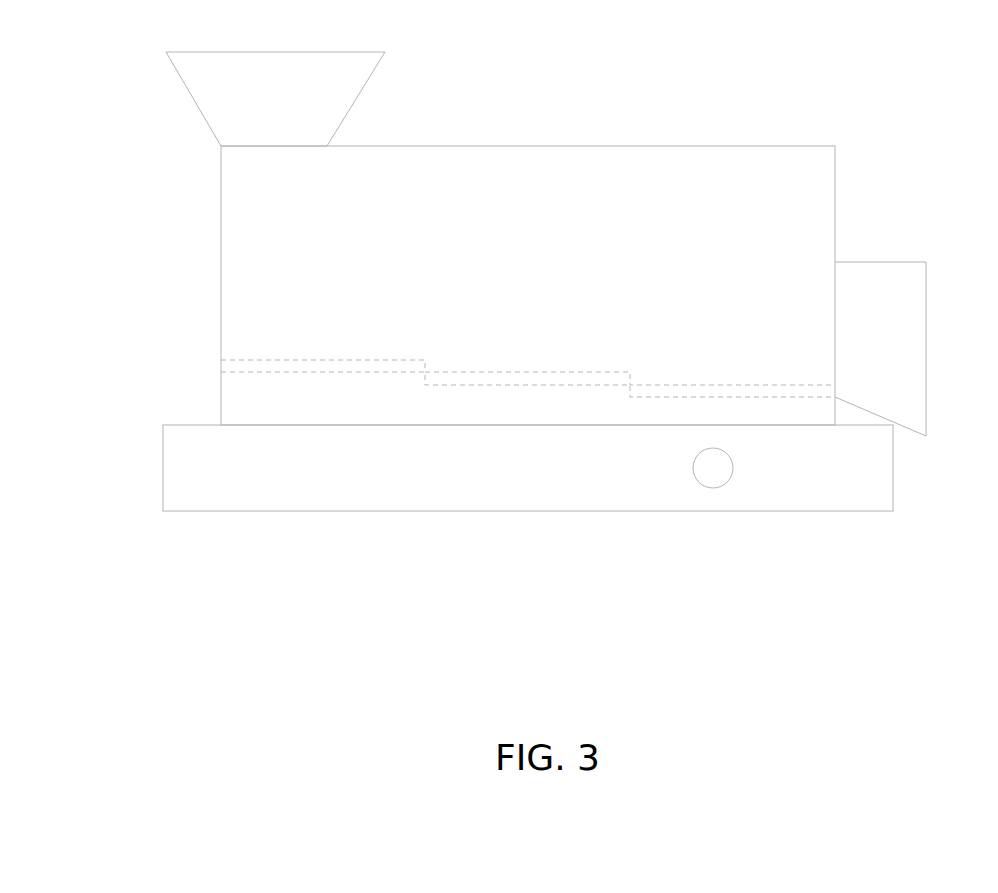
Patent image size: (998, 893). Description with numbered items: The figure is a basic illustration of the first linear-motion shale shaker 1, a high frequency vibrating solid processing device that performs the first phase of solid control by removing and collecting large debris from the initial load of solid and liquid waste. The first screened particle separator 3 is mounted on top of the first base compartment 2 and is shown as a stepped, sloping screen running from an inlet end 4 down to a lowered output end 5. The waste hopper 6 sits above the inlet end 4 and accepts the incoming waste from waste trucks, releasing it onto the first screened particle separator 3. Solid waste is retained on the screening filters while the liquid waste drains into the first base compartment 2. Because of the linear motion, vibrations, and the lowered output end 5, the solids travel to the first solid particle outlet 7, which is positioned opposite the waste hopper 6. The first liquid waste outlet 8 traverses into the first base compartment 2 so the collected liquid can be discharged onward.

The first linear-motion shale shaker 1 is at (103, 389).
The first base compartment 2 is at (378, 503).
The first screened particle separator 3 is at (565, 372).
The inlet end 4 is at (230, 356).
The lowered output end 5 is at (828, 378).
The waste hopper 6 is at (365, 75).
The first solid particle outlet 7 is at (926, 340).
The first liquid waste outlet 8 is at (733, 466).